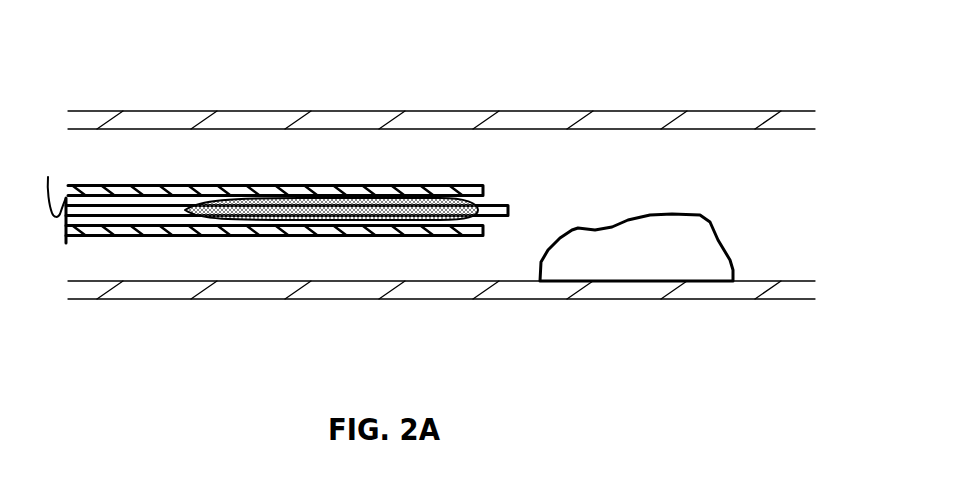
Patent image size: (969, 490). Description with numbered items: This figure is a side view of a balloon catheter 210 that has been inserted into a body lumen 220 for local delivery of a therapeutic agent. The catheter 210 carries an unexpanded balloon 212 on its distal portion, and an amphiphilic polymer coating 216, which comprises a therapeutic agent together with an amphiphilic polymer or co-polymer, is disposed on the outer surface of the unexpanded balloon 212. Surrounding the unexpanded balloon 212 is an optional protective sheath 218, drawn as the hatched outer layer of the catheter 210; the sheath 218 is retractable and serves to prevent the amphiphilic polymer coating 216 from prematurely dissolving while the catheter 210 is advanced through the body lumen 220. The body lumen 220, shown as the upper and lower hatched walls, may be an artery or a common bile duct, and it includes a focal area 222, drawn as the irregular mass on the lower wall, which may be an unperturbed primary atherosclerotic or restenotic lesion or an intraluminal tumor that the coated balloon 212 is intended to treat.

The balloon catheter 210 is at (317, 143).
The unexpanded balloon 212 is at (450, 185).
The amphiphilic polymer coating 216 is at (380, 187).
The protective sheath 218 is at (293, 187).
The body lumen 220 is at (665, 112).
The focal area 222 is at (623, 267).